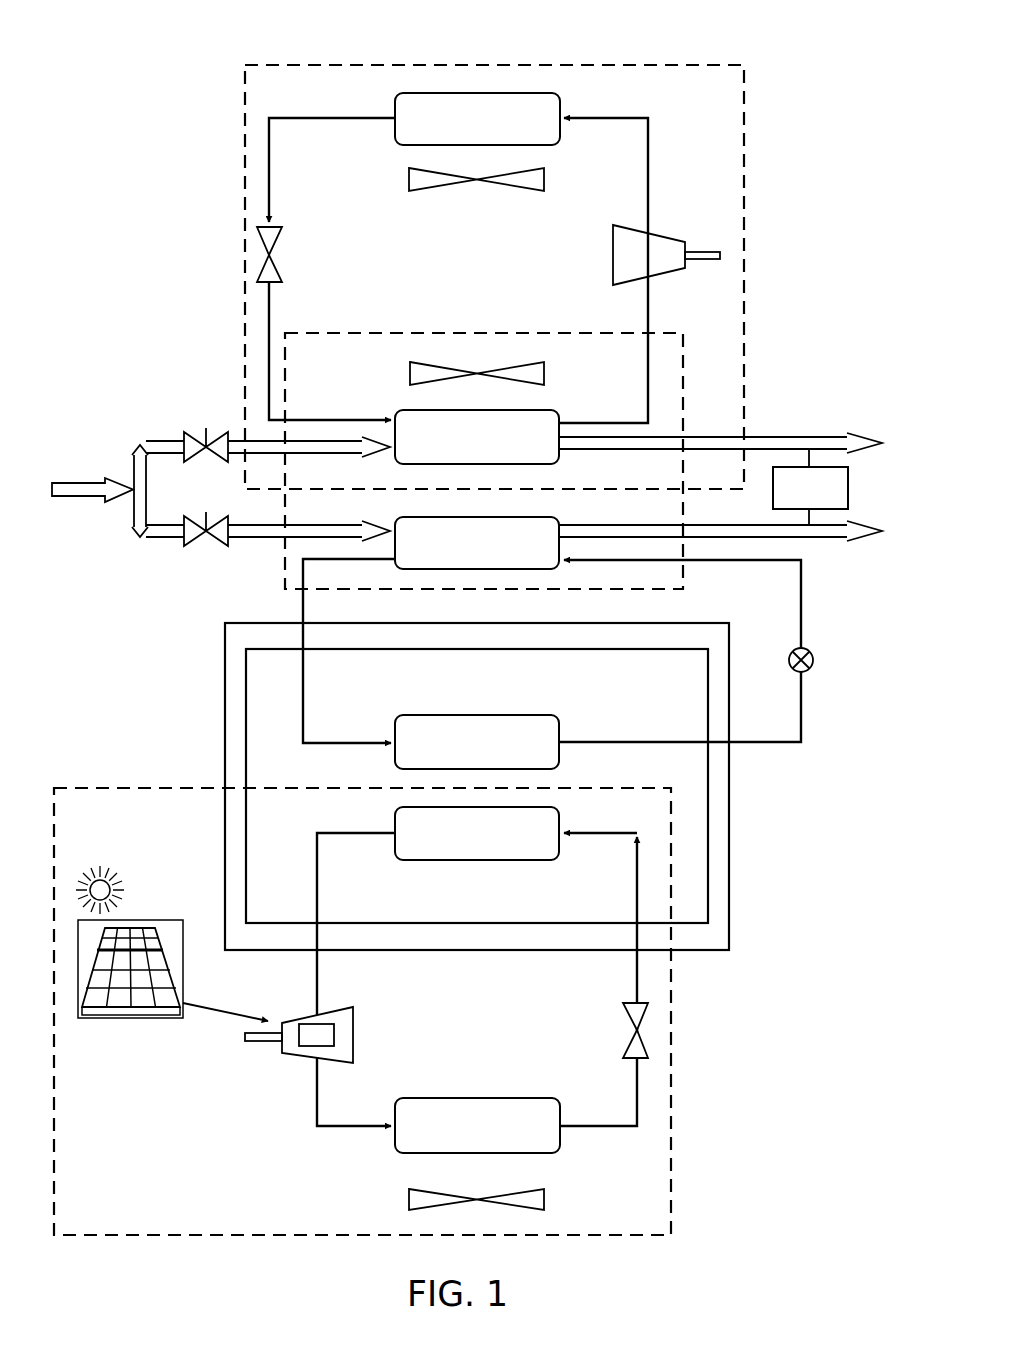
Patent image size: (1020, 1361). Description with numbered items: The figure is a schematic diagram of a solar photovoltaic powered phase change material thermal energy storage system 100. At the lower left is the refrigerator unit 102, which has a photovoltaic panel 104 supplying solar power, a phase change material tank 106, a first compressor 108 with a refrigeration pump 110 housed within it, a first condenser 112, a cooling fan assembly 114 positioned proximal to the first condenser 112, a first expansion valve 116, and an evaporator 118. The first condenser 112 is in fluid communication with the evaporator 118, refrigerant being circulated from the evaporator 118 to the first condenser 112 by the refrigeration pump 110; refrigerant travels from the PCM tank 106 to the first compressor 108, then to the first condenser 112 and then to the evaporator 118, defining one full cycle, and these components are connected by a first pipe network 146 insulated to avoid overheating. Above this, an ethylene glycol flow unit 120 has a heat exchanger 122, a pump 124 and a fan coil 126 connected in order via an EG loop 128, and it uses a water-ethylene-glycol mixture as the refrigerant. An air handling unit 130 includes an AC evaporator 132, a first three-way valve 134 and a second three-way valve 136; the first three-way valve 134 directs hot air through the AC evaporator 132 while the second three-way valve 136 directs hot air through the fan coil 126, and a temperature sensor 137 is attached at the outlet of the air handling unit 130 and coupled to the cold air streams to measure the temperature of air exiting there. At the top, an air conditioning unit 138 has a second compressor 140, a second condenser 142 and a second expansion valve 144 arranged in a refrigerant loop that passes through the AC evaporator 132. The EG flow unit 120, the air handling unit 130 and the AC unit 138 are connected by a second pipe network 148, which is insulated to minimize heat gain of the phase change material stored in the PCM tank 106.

The system 100 is at (168, 44).
The refrigerator unit 102 is at (672, 1096).
The photovoltaic panel 104 is at (120, 996).
The phase change material tank 106 is at (720, 895).
The first compressor 108 is at (352, 1020).
The refrigeration pump 110 is at (326, 1036).
The first condenser 112 is at (457, 1136).
The cooling fan assembly 114 is at (540, 1200).
The first expansion valve 116 is at (630, 1012).
The evaporator 118 is at (457, 844).
The ethylene glycol flow unit 120 is at (825, 736).
The heat exchanger 122 is at (457, 753).
The pump 124 is at (813, 660).
The fan coil 126 is at (457, 554).
The EG loop 128 is at (802, 612).
The air handling unit 130 is at (684, 385).
The AC evaporator 132 is at (457, 448).
The first three-way valve 134 is at (190, 443).
The second three-way valve 136 is at (190, 540).
The temperature sensor 137 is at (790, 500).
The air conditioning unit 138 is at (745, 142).
The second compressor 140 is at (617, 258).
The second condenser 142 is at (457, 129).
The second expansion valve 144 is at (277, 238).
The first pipe network 146 is at (292, 1098).
The second pipe network 148 is at (258, 350).